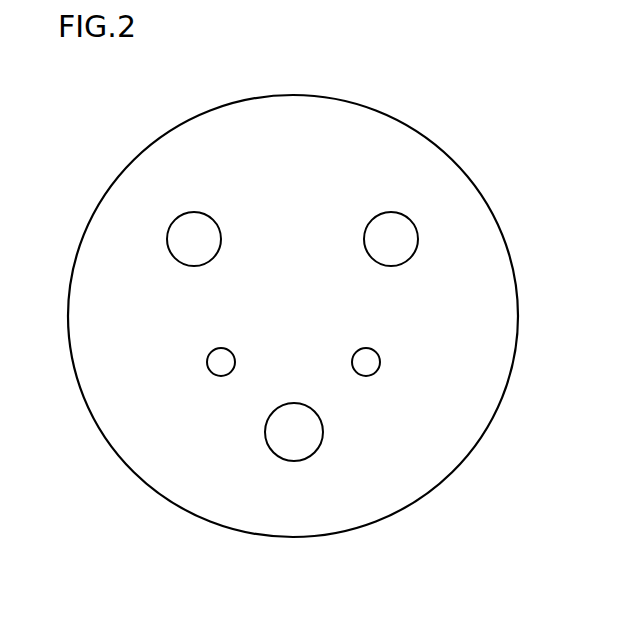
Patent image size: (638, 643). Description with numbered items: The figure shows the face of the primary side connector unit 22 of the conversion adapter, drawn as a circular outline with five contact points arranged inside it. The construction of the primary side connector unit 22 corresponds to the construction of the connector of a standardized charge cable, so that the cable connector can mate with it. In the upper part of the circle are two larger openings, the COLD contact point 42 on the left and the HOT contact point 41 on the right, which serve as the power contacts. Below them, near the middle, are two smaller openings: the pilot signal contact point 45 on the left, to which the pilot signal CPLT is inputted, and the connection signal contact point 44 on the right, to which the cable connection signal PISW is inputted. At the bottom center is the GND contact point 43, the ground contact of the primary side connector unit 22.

The primary side connector unit 22 is at (296, 95).
The HOT contact point 41 is at (414, 220).
The COLD contact point 42 is at (167, 236).
The GND contact point 43 is at (293, 461).
The connection signal contact point 44 is at (380, 360).
The pilot signal contact point 45 is at (207, 364).